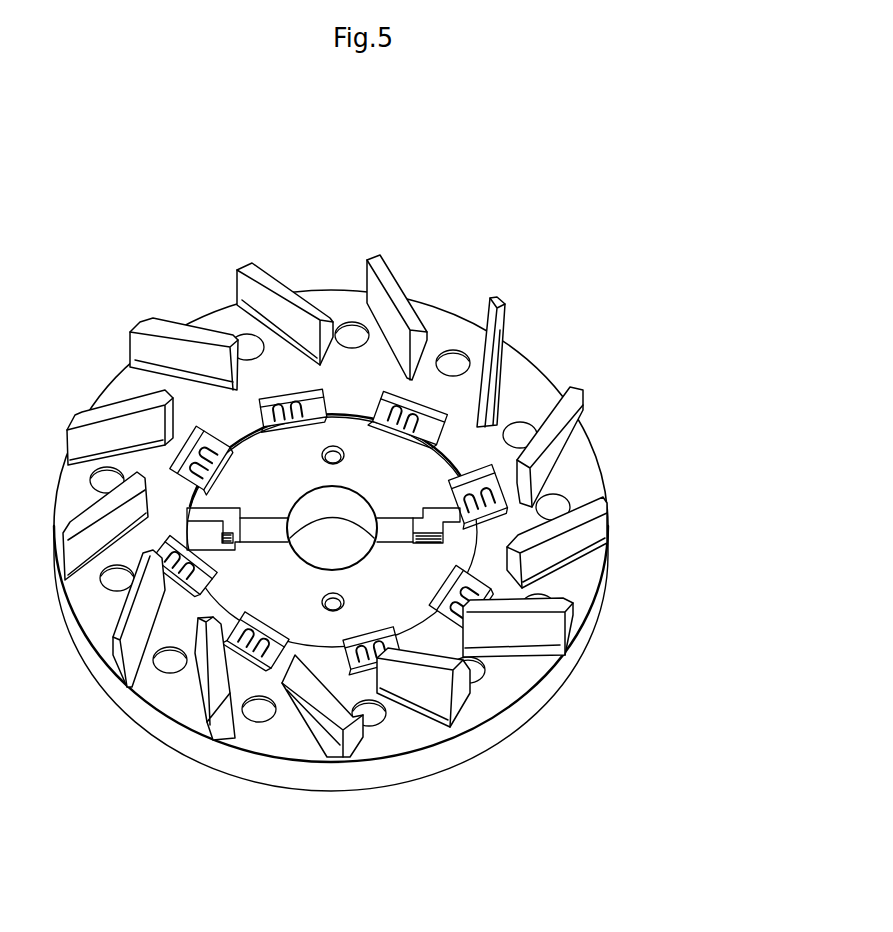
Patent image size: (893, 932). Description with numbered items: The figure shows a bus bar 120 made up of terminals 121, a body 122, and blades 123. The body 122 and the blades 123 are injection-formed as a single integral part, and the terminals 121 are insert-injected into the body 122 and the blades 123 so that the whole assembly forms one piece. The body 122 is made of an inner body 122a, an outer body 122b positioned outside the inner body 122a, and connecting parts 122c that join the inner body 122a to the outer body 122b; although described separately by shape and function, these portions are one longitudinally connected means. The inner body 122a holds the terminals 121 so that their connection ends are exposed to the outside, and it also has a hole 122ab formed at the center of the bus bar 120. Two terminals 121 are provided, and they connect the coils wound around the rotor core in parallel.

The bus bar 120 is at (454, 243).
The terminals 121 is at (283, 390).
The body 122 is at (597, 400).
The inner body 122a is at (407, 570).
The outer body 122b is at (574, 474).
The connecting parts 122c is at (540, 369).
The hole 122ab is at (360, 566).
The blades 123 is at (163, 327).